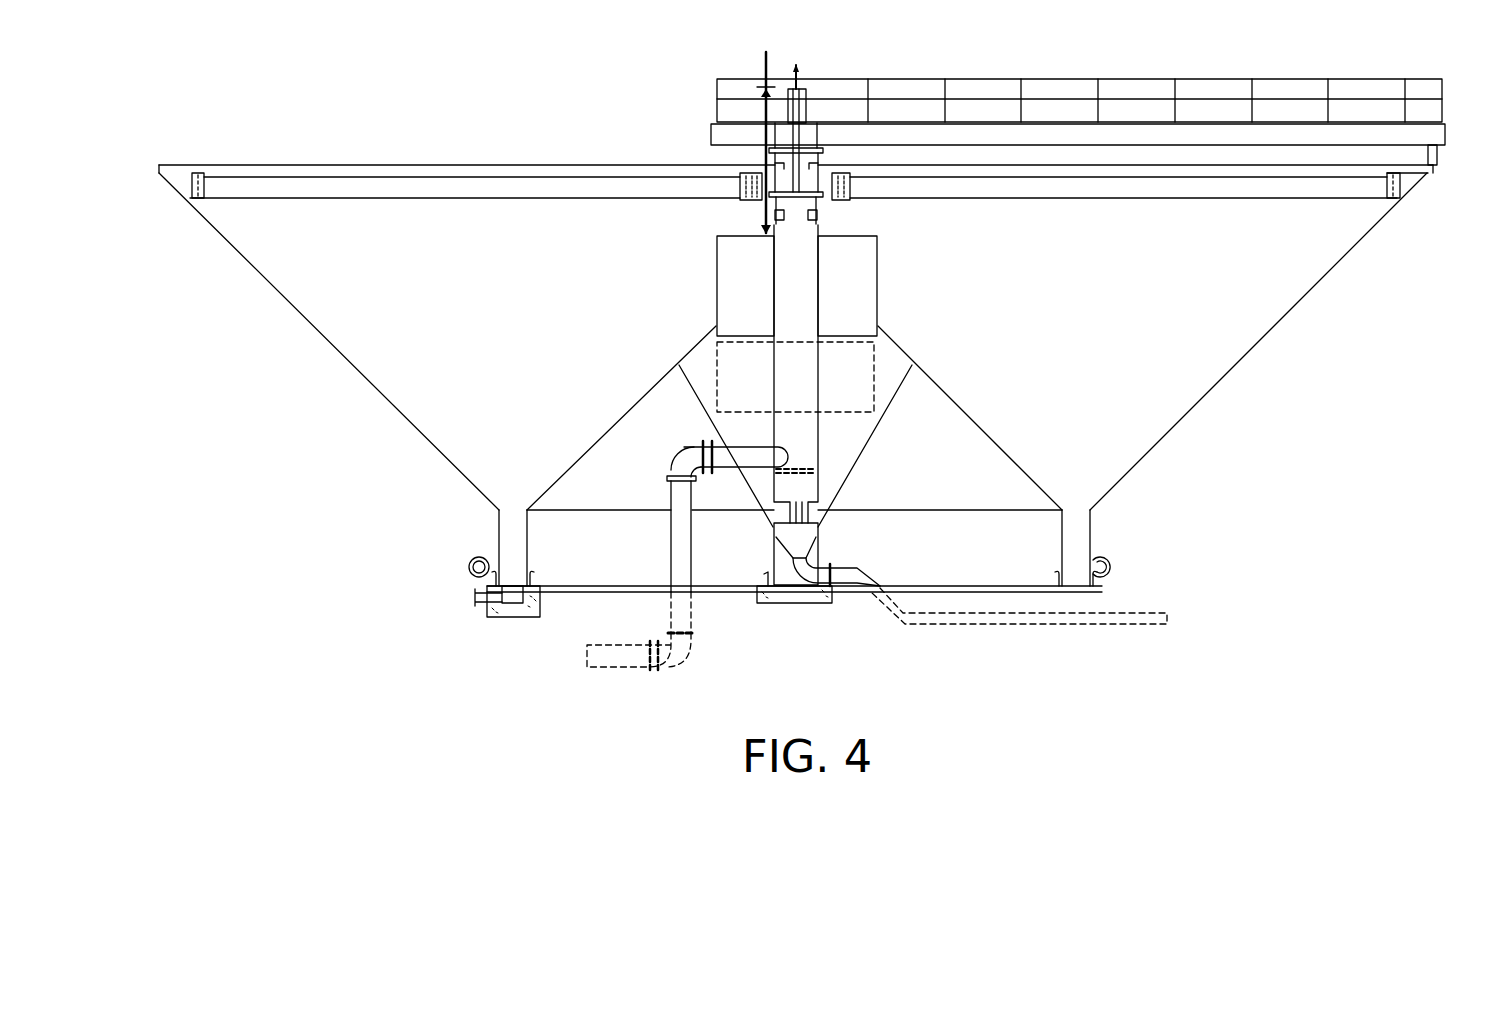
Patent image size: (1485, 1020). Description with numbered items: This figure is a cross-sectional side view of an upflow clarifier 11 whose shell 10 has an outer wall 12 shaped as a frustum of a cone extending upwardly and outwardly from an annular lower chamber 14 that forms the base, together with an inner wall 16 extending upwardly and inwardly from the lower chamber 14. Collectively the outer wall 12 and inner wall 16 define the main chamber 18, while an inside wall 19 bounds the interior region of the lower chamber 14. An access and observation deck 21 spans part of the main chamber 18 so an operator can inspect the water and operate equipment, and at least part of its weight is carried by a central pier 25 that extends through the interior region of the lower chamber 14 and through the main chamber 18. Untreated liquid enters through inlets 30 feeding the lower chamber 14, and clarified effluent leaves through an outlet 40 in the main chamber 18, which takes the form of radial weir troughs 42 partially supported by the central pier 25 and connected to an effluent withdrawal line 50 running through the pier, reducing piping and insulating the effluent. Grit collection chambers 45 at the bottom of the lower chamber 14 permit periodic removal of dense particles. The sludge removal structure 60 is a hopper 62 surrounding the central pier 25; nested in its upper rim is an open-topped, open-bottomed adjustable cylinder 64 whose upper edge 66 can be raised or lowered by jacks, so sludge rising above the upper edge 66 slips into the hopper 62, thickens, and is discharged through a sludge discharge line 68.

The shell 10 is at (1305, 306).
The clarifier 11 is at (340, 361).
The outer wall 12 is at (1233, 379).
The lower chamber 14 is at (503, 554).
The inner wall 16 is at (1023, 470).
The main chamber 18 is at (1183, 325).
The inside wall 19 is at (1010, 575).
The access and observation deck 21 is at (1124, 128).
The central pier 25 is at (787, 247).
The inlets 30 is at (495, 564).
The outlet 40 is at (362, 185).
The radial weir trough 42 is at (273, 189).
The grit collection chamber 45 is at (510, 601).
The effluent withdrawal line 50 is at (797, 584).
The sludge removal structure 60 is at (726, 297).
The hopper 62 is at (853, 470).
The adjustable cylinder 64 is at (877, 277).
The upper edge 66 is at (839, 236).
The sludge discharge line 68 is at (677, 555).